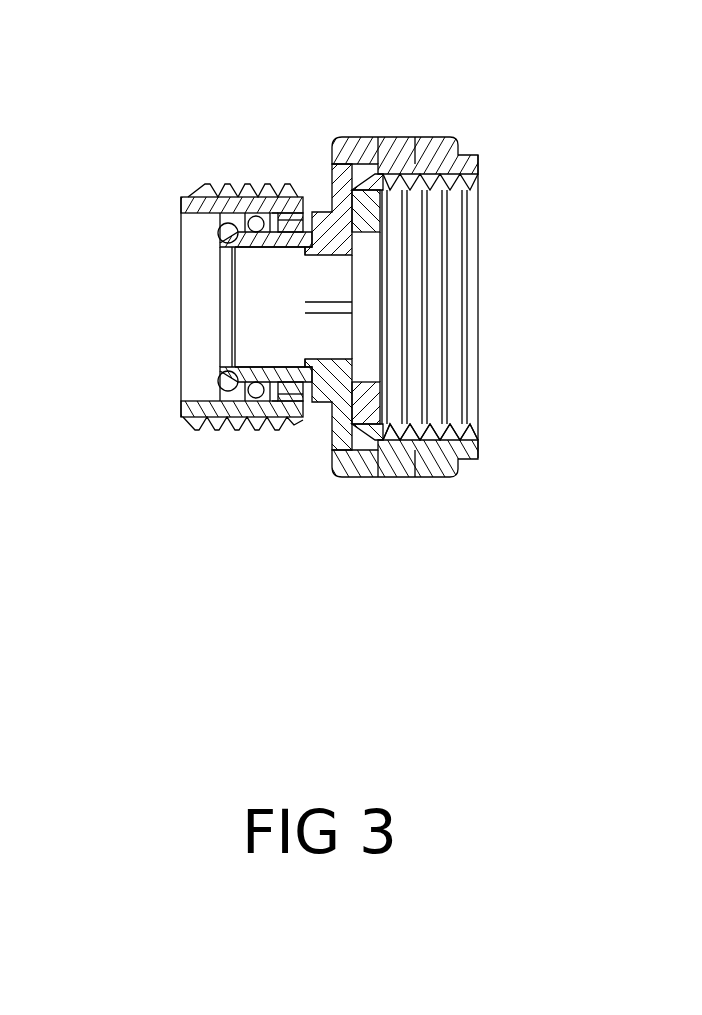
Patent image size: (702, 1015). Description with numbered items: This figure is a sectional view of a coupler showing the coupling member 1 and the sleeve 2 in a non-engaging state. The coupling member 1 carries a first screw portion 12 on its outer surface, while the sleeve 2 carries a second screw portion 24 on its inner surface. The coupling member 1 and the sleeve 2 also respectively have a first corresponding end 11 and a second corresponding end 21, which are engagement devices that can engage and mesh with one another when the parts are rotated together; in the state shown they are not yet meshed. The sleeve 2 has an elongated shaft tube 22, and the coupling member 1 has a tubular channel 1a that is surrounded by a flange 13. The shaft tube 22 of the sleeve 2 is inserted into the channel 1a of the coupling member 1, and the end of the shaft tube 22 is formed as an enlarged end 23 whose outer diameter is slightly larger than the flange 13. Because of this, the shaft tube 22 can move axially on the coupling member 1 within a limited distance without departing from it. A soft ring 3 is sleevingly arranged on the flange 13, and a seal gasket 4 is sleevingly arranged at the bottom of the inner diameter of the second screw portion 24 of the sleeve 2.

The coupling member 1 is at (341, 313).
The channel 1a is at (184, 260).
The sleeve 2 is at (341, 366).
The soft ring 3 is at (257, 215).
The seal gasket 4 is at (473, 307).
The first corresponding end 11 is at (300, 198).
The first screw portion 12 is at (222, 185).
The flange 13 is at (214, 248).
The second corresponding end 21 is at (321, 397).
The shaft tube 22 is at (280, 377).
The enlarged end 23 is at (236, 396).
The second screw portion 24 is at (457, 430).